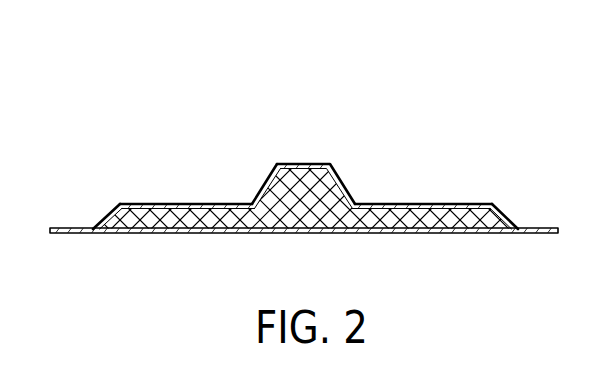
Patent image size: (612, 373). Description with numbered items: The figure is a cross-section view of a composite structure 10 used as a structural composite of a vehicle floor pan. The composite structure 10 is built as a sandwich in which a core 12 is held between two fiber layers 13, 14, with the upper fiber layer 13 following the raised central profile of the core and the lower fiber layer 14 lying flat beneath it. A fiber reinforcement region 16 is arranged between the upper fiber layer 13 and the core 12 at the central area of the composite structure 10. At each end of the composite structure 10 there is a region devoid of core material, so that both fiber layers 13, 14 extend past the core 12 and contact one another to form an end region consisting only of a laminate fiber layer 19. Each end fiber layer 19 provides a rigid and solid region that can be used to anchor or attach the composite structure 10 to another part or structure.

The composite structure 10 is at (306, 151).
The core 12 is at (316, 168).
The fiber layer 13 is at (415, 205).
The fiber layer 14 is at (290, 234).
The fiber reinforcement region 16 is at (265, 182).
The laminate fiber layer 19 is at (67, 228).